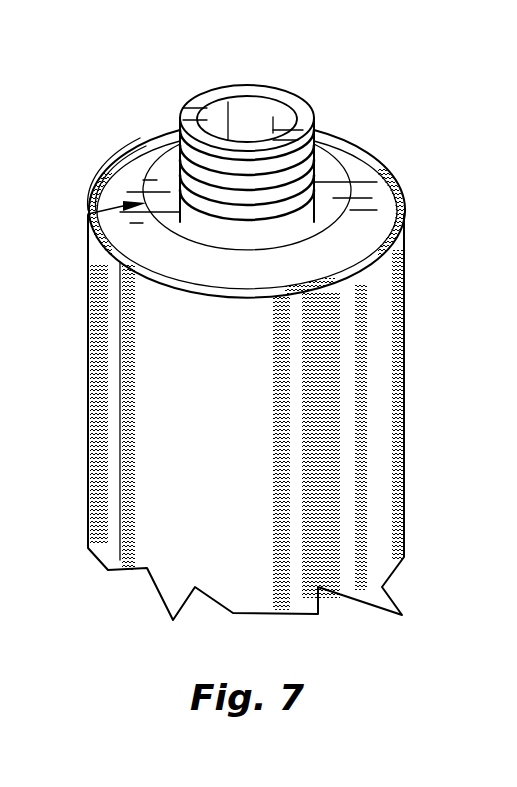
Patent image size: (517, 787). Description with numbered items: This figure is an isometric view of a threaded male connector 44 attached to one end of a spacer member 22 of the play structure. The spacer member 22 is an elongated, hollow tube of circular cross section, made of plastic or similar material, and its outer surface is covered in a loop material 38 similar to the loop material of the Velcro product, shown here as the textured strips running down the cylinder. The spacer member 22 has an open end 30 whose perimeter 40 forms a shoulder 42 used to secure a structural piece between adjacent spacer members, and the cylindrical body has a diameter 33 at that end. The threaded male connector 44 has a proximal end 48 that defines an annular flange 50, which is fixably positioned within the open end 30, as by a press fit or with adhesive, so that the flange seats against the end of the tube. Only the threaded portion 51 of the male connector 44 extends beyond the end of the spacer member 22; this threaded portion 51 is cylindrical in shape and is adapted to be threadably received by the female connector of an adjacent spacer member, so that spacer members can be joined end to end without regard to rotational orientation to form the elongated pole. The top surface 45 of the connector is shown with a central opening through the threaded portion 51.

The spacer member 22 is at (403, 435).
The open end 30 is at (365, 175).
The diameter 33 is at (403, 247).
The loop material 38 is at (337, 502).
The perimeter 40 is at (117, 162).
The shoulder 42 is at (88, 214).
The threaded male connector 44 is at (280, 76).
The boss top surface 45 is at (295, 100).
The proximal end 48 is at (325, 172).
The annular flange 50 is at (163, 167).
The threaded portion 51 is at (250, 88).